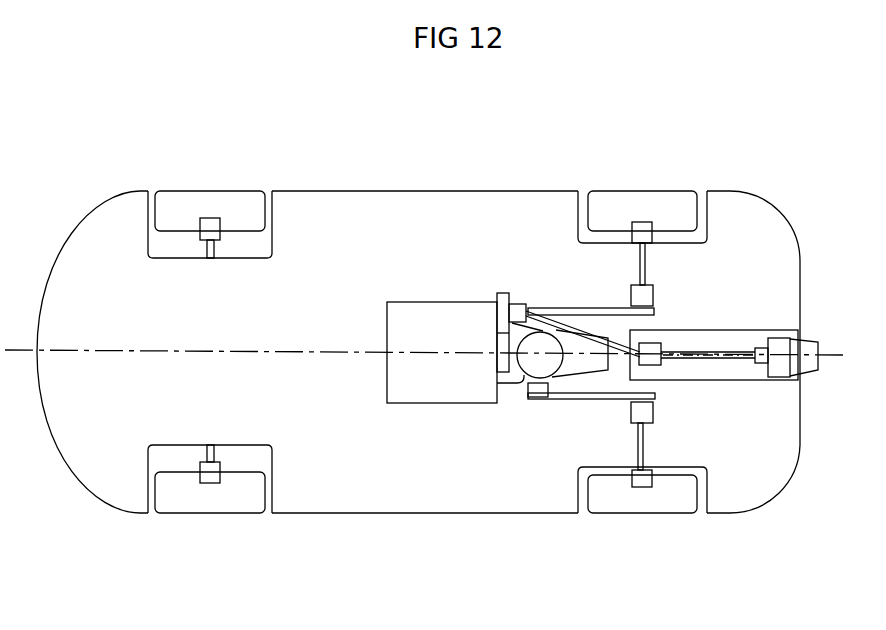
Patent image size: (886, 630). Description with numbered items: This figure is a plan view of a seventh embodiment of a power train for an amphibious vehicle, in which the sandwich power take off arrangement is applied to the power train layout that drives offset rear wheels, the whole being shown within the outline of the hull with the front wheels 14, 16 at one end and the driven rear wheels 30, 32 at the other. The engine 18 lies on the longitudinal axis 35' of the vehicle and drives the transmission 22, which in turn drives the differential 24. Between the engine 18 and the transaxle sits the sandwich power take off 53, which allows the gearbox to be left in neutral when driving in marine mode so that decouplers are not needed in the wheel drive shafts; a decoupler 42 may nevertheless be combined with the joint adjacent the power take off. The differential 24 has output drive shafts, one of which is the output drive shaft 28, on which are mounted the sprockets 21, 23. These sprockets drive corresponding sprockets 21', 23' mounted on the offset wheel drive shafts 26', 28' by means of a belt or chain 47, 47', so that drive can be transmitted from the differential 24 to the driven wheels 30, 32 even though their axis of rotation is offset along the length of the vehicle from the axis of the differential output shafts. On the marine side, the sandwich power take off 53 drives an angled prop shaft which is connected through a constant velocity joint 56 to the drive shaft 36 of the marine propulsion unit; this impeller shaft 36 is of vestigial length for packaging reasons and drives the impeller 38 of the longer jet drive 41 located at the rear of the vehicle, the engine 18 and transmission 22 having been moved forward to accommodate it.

The front wheel 14 is at (183, 205).
The front wheel 16 is at (185, 503).
The engine 18 is at (415, 318).
The sprocket 21 is at (537, 243).
The sprocket 21' is at (707, 231).
The transmission 22 is at (597, 363).
The sprocket 23 is at (505, 483).
The sprocket 23' is at (751, 493).
The differential 24 is at (553, 362).
The offset wheel drive shaft 26' is at (583, 222).
The output drive shaft 28 is at (472, 479).
The offset wheel drive shaft 28' is at (703, 504).
The driven wheel 30 is at (612, 212).
The driven wheel 32 is at (653, 495).
The drive axis 35' is at (367, 306).
The impeller shaft 36 is at (742, 358).
The impeller 38 is at (783, 346).
The jet drive 41 is at (755, 338).
The decoupler 42 is at (527, 304).
The belt or chain 47 is at (511, 230).
The belt or chain 47' is at (591, 489).
The sandwich power take off 53 is at (493, 292).
The constant velocity joint 56 is at (660, 338).